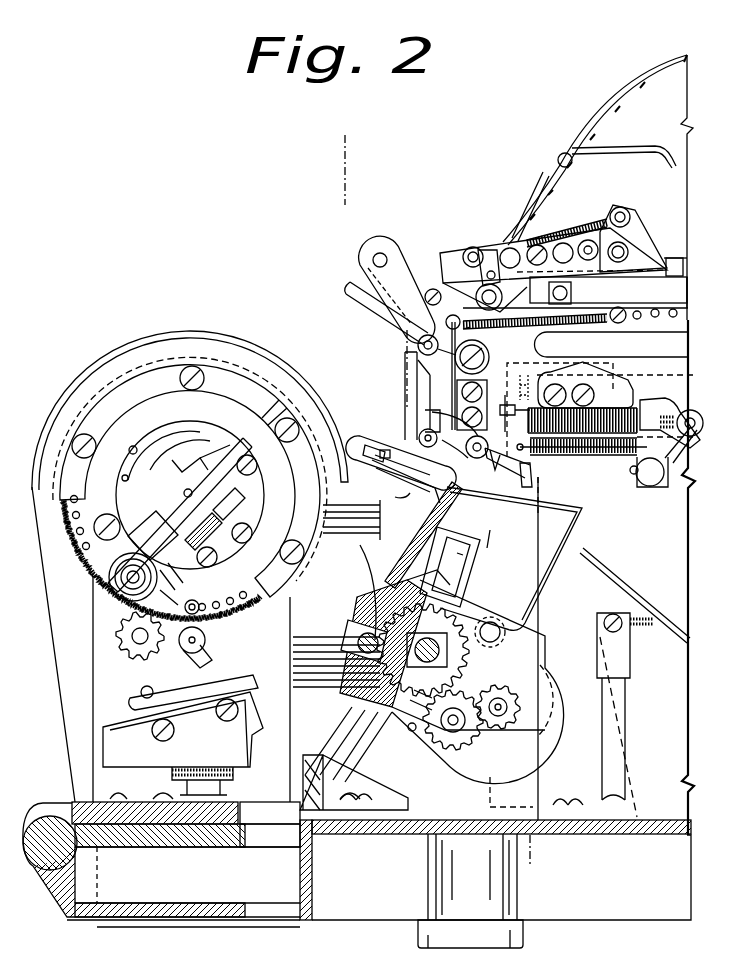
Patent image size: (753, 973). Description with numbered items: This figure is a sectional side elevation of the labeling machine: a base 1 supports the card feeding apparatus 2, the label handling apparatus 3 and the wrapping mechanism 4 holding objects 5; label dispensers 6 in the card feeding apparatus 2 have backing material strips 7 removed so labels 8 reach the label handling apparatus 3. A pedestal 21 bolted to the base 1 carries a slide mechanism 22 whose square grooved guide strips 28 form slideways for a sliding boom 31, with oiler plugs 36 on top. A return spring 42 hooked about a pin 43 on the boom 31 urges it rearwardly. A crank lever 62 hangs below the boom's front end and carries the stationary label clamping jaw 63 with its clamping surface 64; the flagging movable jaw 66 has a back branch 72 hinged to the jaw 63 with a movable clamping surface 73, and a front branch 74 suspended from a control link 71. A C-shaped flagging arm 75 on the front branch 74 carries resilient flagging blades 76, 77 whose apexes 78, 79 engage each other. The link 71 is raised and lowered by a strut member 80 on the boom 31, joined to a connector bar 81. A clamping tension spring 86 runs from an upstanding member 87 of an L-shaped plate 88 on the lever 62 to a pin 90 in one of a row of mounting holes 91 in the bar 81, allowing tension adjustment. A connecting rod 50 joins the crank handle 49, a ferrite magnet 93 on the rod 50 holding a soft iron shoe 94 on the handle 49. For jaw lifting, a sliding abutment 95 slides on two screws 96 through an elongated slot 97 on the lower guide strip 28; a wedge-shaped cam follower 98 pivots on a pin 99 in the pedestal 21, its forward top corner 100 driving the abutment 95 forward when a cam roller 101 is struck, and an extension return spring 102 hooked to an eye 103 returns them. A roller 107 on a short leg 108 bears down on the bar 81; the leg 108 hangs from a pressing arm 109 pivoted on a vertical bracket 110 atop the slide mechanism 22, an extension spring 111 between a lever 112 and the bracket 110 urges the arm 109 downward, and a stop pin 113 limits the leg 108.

The base 1 is at (535, 833).
The card feeding apparatus 2 is at (455, 779).
The label handling apparatus 3 is at (520, 854).
The wrapping mechanism 4 is at (110, 352).
The objects 5 is at (185, 493).
The label dispensers 6 is at (426, 534).
The strips of backing material 7 is at (460, 555).
The labels 8 is at (470, 512).
The pedestal 21 is at (533, 785).
The slide mechanism 22 is at (699, 309).
The square grooved guide strips 28 is at (690, 277).
The sliding boom 31 is at (690, 360).
The oiler plugs 36 is at (675, 257).
The sliding boom return spring 42 is at (700, 410).
The pin 43 is at (498, 476).
The crank handle 49 is at (385, 243).
The connecting rod 50 is at (455, 253).
The crank lever 62 is at (452, 390).
The stationary label clamping jaw 63 is at (508, 413).
The label clamping surface 64 is at (534, 488).
The flagging movable jaw 66 is at (395, 432).
The control link 71 is at (410, 400).
The back branch 72 is at (460, 435).
The movable clamping surface 73 is at (500, 492).
The front branch 74 is at (433, 430).
The C-shaped flagging arm 75 is at (378, 440).
The upper resilient flagging blade 76 is at (394, 437).
The lower resilient flagging blade 77 is at (395, 497).
The apex 78 is at (428, 447).
The apex 79 is at (430, 500).
The strut member 80 is at (455, 360).
The connector bar 81 is at (665, 318).
The clamping tension spring 86 is at (585, 316).
The upstanding member 87 is at (418, 348).
The L-shaped plate 88 is at (445, 372).
The pin 90 is at (635, 320).
The mounting holes 91 is at (672, 318).
The ferrite magnet 93 is at (476, 250).
The magnetic soft iron shoe 94 is at (400, 285).
The horizontal sliding abutment 95 is at (530, 372).
The screws 96 is at (584, 390).
The elongated slot 97 is at (605, 395).
The wedge-shaped cam follower 98 is at (702, 478).
The pin 99 is at (652, 482).
The forward top corner 100 is at (660, 394).
The cam roller 101 is at (692, 432).
The extension return spring 102 is at (634, 468).
The eye 103 is at (568, 455).
The roller 107 is at (478, 296).
The short leg 108 is at (468, 250).
The pressing arm 109 is at (515, 235).
The vertical bracket 110 is at (645, 242).
The extension spring 111 is at (572, 225).
The lever 112 is at (621, 207).
The stop pin 113 is at (490, 250).